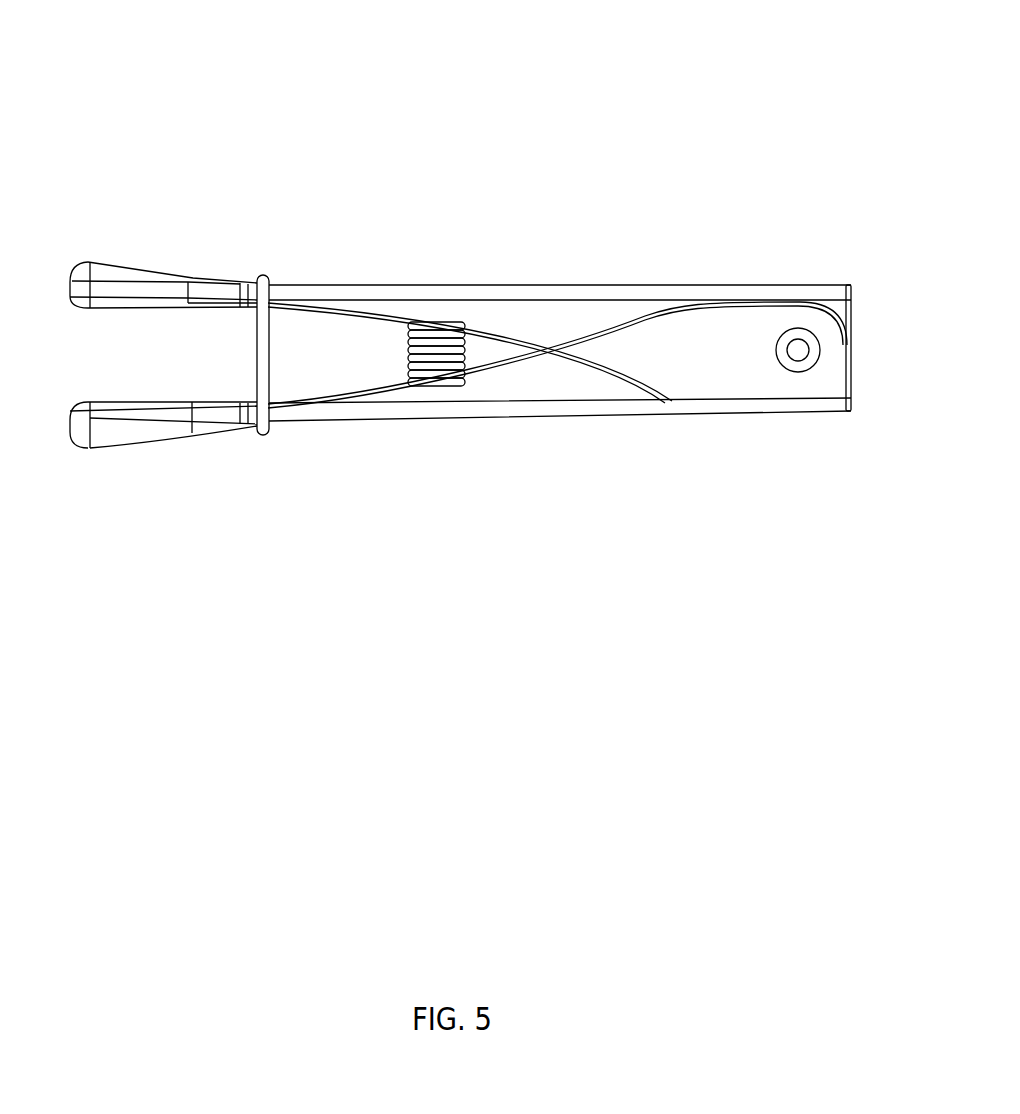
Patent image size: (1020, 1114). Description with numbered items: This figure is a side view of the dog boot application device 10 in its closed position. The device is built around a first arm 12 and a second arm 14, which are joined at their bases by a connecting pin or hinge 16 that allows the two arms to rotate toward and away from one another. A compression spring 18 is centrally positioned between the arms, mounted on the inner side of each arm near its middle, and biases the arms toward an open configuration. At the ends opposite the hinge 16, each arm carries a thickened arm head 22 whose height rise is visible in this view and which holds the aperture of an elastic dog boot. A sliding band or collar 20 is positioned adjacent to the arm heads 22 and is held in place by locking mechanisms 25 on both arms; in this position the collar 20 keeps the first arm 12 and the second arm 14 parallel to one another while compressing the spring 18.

The dog boot application device 10 is at (463, 282).
The first arm 12 is at (585, 290).
The second arm 14 is at (640, 367).
The connecting pin or hinge 16 is at (798, 350).
The compression spring 18 is at (438, 353).
The collar 20 is at (263, 358).
The arm head 22 is at (118, 440).
The locking mechanism 25 is at (280, 283).